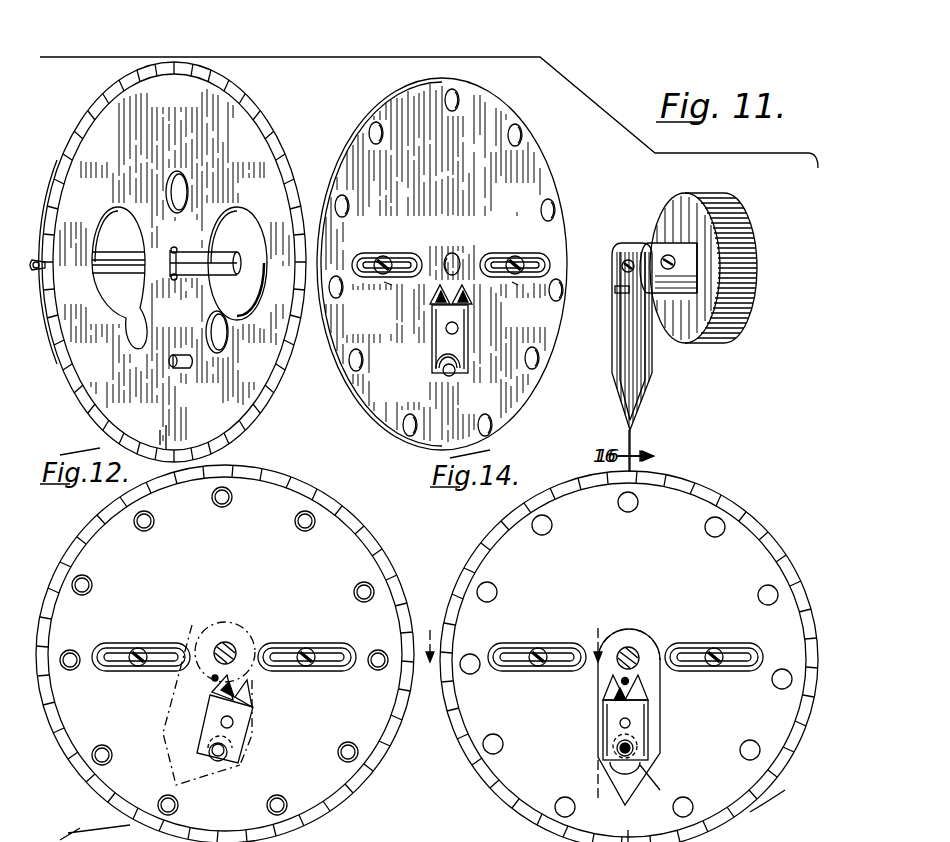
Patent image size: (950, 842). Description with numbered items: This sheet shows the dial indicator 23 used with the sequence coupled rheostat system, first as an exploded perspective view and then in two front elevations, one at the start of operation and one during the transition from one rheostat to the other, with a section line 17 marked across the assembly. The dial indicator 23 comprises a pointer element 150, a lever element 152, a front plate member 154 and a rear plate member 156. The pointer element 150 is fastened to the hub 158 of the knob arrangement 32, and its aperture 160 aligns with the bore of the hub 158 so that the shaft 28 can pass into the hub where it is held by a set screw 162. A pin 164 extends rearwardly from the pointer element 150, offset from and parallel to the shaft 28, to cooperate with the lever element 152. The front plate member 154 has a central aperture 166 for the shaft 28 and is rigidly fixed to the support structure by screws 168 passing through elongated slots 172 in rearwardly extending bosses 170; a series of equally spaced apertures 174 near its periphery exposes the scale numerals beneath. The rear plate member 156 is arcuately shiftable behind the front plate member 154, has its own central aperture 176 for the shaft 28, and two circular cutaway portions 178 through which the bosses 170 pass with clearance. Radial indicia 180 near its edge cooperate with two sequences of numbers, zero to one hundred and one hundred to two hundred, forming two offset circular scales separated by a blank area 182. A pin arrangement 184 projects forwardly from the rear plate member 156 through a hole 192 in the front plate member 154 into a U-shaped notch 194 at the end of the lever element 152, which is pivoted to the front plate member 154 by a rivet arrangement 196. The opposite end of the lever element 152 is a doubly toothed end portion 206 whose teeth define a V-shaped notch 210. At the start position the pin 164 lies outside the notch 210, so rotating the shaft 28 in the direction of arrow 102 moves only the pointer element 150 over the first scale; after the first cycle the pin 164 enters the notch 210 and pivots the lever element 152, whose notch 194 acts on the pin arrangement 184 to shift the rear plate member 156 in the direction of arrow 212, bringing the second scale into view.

In FIG. 11, the dial indicator 23 is at (82, 98).
In FIG. 11, the shaft 28 is at (192, 257).
In FIG. 12, the shaft 28 is at (232, 640).
In FIG. 14, the shaft 28 is at (640, 647).
In FIG. 11, the knob arrangement 32 is at (750, 216).
In FIG. 14, the section line 17 is at (512, 705).
In FIG. 12, the arrow 102 is at (346, 590).
In FIG. 14, the arrow 102 is at (684, 753).
In FIG. 11, the pointer element 150 is at (650, 381).
In FIG. 12, the pointer element 150 is at (206, 698).
In FIG. 14, the pointer element 150 is at (602, 770).
In FIG. 11, the lever element 152 is at (466, 348).
In FIG. 12, the lever element 152 is at (253, 724).
In FIG. 14, the lever element 152 is at (660, 709).
In FIG. 11, the front plate member 154 is at (424, 82).
In FIG. 12, the front plate member 154 is at (190, 569).
In FIG. 14, the front plate member 154 is at (588, 569).
In FIG. 11, the rear plate member 156 is at (246, 84).
In FIG. 12, the rear plate member 156 is at (342, 500).
In FIG. 14, the rear plate member 156 is at (697, 482).
In FIG. 11, the hub 158 is at (650, 243).
In FIG. 11, the aperture 160 is at (625, 262).
In FIG. 11, the set screw 162 is at (667, 254).
In FIG. 11, the pin 164 is at (618, 296).
In FIG. 12, the pin 164 is at (212, 670).
In FIG. 14, the pin 164 is at (630, 680).
In FIG. 11, the central aperture 166 is at (453, 252).
In FIG. 11, the screws 168 is at (387, 263).
In FIG. 11, the bosses 170 is at (402, 255).
In FIG. 11, the elongated slots 172 is at (385, 290).
In FIG. 11, the apertures 174 is at (334, 150).
In FIG. 12, the apertures 174 is at (300, 515).
In FIG. 14, the apertures 174 is at (758, 585).
In FIG. 11, the central aperture 176 is at (170, 272).
In FIG. 11, the cutaway portions 178 is at (122, 210).
In FIG. 11, the radial indicia 180 is at (154, 66).
In FIG. 12, the radial indicia 180 is at (58, 568).
In FIG. 14, the radial indicia 180 is at (790, 578).
In FIG. 11, the blank area 182 is at (170, 446).
In FIG. 14, the blank area 182 is at (616, 834).
In FIG. 11, the pin arrangement 184 is at (169, 357).
In FIG. 12, the pin arrangement 184 is at (218, 760).
In FIG. 14, the pin arrangement 184 is at (620, 752).
In FIG. 11, the hole 192 is at (445, 368).
In FIG. 11, the U-shaped notch 194 is at (458, 370).
In FIG. 12, the U-shaped notch 194 is at (240, 760).
In FIG. 14, the U-shaped notch 194 is at (640, 758).
In FIG. 11, the rivet arrangement 196 is at (447, 330).
In FIG. 11, the doubly toothed end portion 206 is at (441, 294).
In FIG. 12, the doubly toothed end portion 206 is at (208, 692).
In FIG. 12, the V-shaped notch 210 is at (250, 645).
In FIG. 14, the V-shaped notch 210 is at (632, 626).
In FIG. 14, the arrow 212 is at (750, 828).